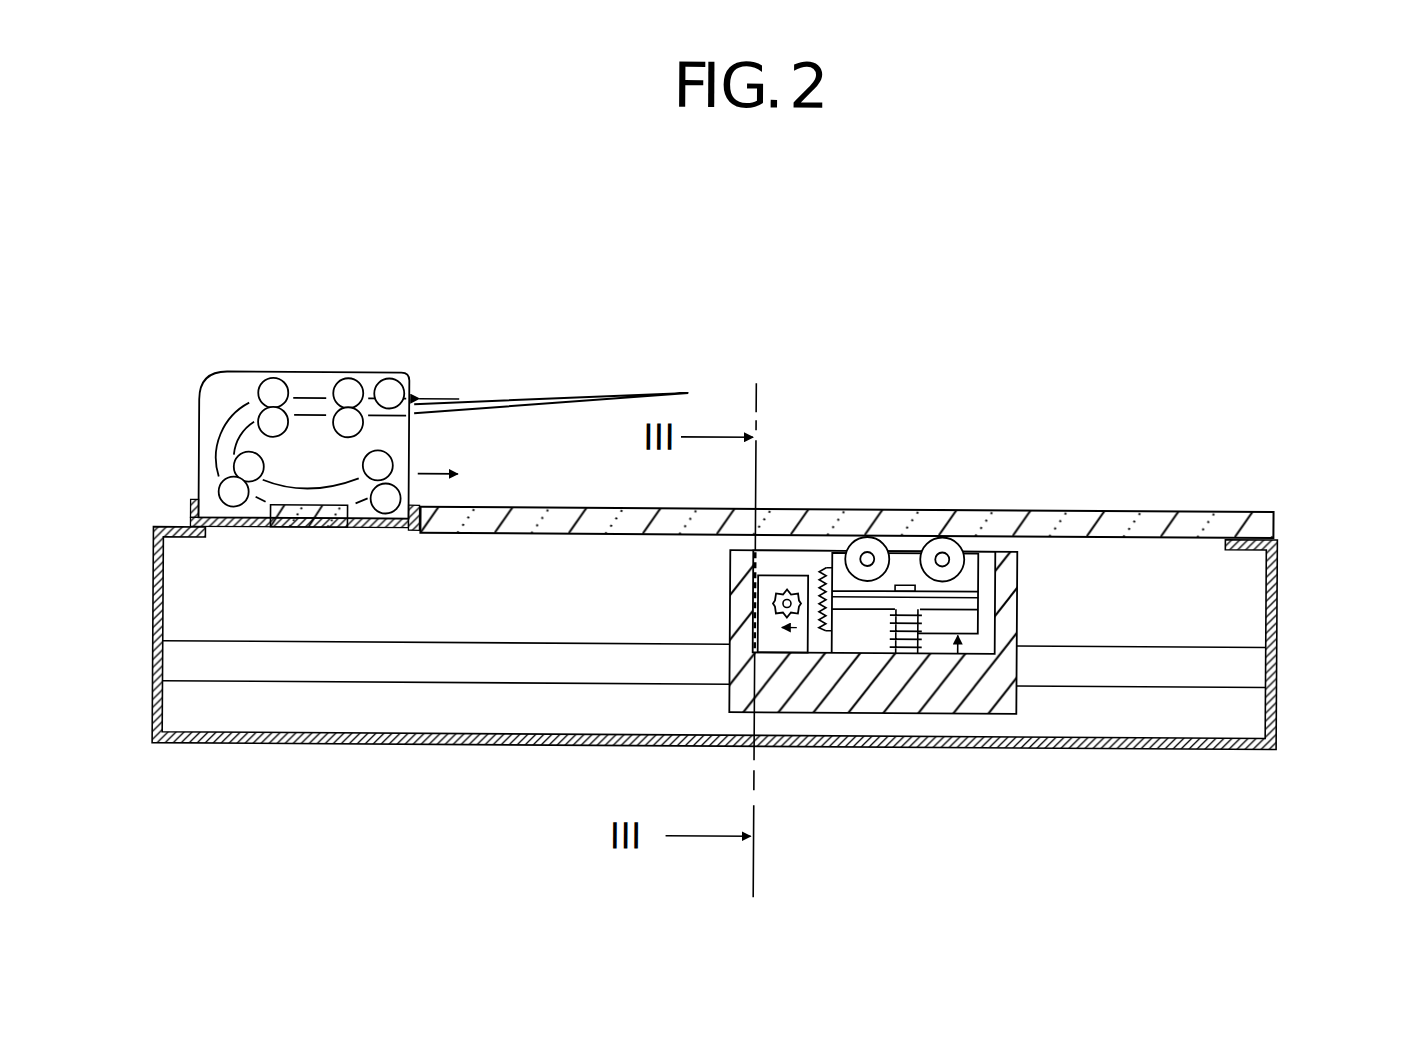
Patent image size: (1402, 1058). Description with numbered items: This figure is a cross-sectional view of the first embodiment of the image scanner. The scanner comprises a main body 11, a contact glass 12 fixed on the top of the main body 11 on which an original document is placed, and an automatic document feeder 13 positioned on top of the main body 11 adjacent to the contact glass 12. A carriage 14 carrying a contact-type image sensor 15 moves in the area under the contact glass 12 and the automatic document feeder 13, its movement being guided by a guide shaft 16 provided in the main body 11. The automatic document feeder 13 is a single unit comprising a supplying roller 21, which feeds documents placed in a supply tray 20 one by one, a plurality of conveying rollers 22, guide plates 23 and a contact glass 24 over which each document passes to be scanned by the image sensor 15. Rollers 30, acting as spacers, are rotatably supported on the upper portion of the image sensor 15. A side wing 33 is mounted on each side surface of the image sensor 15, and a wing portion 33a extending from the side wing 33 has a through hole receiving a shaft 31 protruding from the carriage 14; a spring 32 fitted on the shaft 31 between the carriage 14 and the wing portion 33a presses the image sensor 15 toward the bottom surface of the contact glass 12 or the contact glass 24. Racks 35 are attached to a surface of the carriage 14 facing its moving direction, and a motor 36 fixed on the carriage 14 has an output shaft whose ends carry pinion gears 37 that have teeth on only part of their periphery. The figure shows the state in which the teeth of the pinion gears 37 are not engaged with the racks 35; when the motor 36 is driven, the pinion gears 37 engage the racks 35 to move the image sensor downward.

The main body 11 is at (1277, 586).
The contact glass 12 is at (1076, 516).
The automatic document feeder (ADF) 13 is at (220, 370).
The carriage 14 is at (920, 712).
The contact-type image sensor 15 is at (958, 652).
The guide shaft 16 is at (1200, 670).
The supply tray 20 is at (627, 390).
The supplying roller 21 is at (407, 383).
The conveying rollers 22 is at (272, 393).
The guide plates 23 is at (220, 423).
The contact glass 24 is at (305, 530).
The rollers 30 is at (867, 536).
The shaft 31 is at (918, 632).
The spring 32 is at (918, 623).
The side wing 33 is at (878, 618).
The wing portion 33a is at (857, 597).
The racks 35 is at (820, 557).
The motor 36 is at (783, 647).
The pinion gears 37 is at (732, 558).